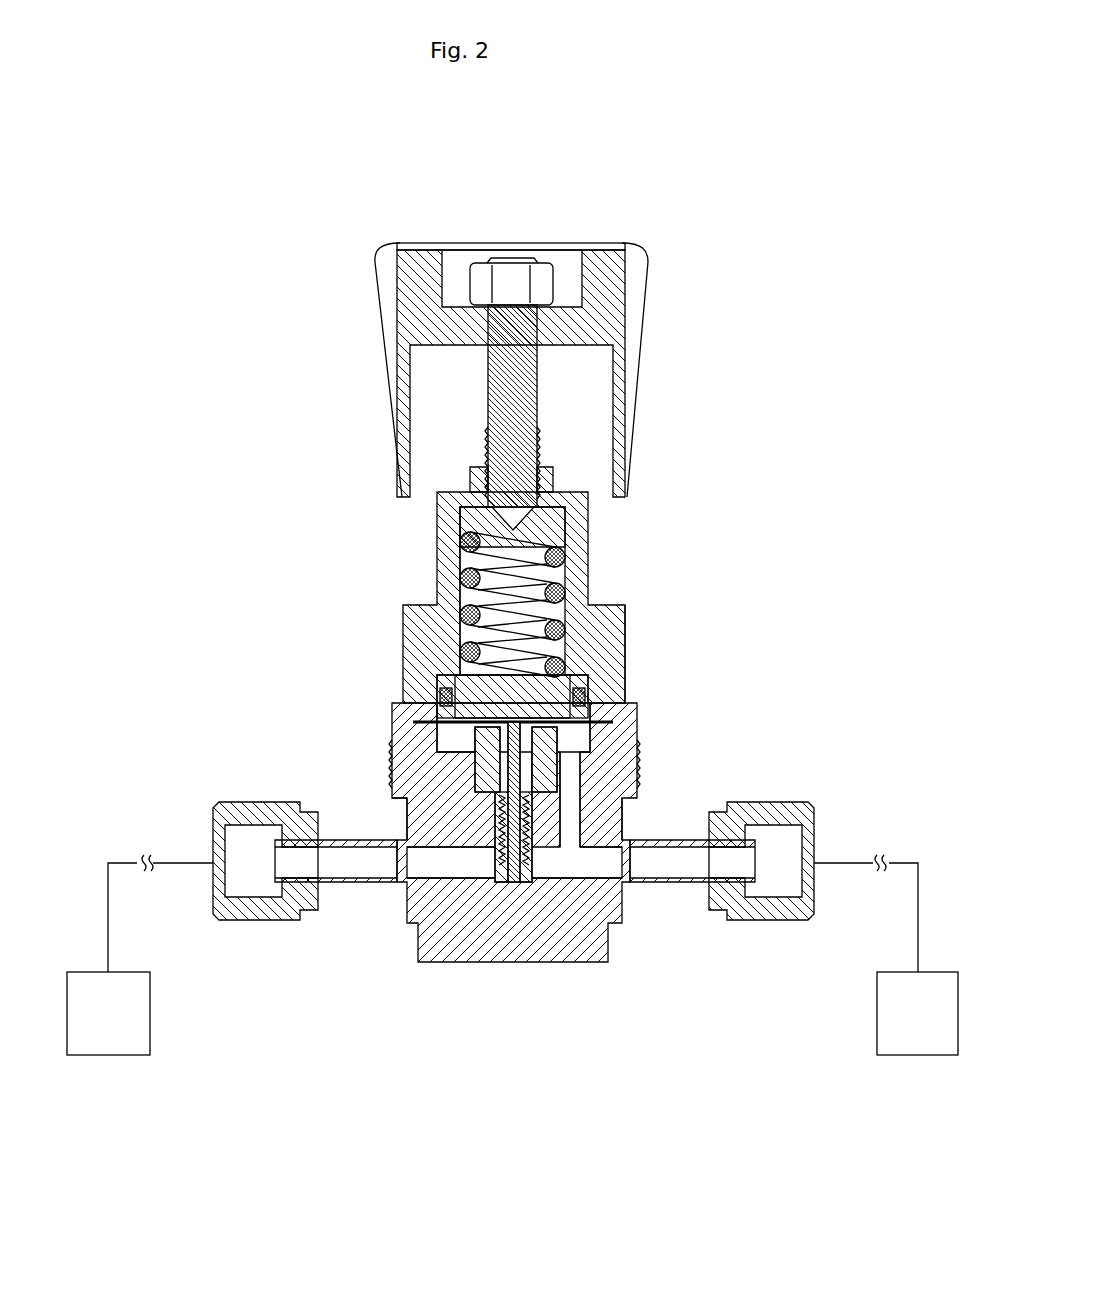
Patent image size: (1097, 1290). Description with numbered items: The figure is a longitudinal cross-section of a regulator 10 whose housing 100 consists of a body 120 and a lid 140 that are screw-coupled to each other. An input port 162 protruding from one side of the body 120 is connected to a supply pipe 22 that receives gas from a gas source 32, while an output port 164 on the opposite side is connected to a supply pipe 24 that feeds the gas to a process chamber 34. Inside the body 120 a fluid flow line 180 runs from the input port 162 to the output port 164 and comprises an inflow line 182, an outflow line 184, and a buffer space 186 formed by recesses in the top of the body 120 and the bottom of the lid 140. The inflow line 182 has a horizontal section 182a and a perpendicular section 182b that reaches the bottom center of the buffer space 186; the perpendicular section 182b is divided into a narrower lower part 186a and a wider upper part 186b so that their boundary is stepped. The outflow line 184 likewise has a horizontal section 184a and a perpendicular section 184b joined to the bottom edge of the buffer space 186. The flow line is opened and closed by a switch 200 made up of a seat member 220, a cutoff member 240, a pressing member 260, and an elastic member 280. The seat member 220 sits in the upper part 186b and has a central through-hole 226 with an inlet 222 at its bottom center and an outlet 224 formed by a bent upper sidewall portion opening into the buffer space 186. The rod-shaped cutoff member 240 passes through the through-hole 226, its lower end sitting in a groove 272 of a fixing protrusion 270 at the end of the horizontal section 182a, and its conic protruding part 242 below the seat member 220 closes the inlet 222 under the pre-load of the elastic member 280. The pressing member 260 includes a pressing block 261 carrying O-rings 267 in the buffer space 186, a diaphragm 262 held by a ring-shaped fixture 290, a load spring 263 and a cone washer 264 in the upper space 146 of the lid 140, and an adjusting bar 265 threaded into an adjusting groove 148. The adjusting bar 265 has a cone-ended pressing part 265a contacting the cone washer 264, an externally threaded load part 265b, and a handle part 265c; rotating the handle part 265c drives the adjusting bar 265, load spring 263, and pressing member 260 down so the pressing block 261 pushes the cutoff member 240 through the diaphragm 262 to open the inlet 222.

The regulator 10 is at (729, 174).
The supply pipe 22 is at (108, 935).
The supply pipe 24 is at (918, 935).
The gas source 32 is at (108, 1057).
The process chamber 34 is at (918, 1057).
The housing 100 is at (810, 645).
The body 120 is at (615, 808).
The lid 140 is at (630, 665).
The upper space 146 is at (462, 553).
The adjusting groove 148 is at (485, 440).
The input port 162 is at (352, 884).
The output port 164 is at (689, 884).
The fluid flow line 180 is at (602, 1112).
The inflow line 182 is at (503, 1068).
The horizontal section 182a is at (448, 868).
The perpendicular section 182b is at (480, 870).
The outflow line 184 is at (632, 1068).
The horizontal section 184a is at (598, 868).
The perpendicular section 184b is at (548, 872).
The buffer space 186 is at (445, 852).
The lower part 186a is at (406, 826).
The upper part 186b is at (432, 786).
The switch 200 is at (270, 652).
The seat member 220 is at (410, 762).
The inlet 222 is at (612, 778).
The outlet 224 is at (476, 745).
The through-hole 226 is at (606, 748).
The cutoff member 240 is at (478, 706).
The protruding part 242 is at (600, 806).
The pressing member 260 is at (460, 678).
The pressing block 261 is at (600, 645).
The diaphragm 262 is at (606, 722).
The load spring 263 is at (566, 590).
The cone washer 264 is at (548, 508).
The adjusting bar 265 is at (740, 372).
The pressing part 265a is at (555, 497).
The load part 265b is at (537, 437).
The handle part 265c is at (625, 385).
The O-rings 267 is at (578, 690).
The fixing protrusion 270 is at (527, 865).
The groove 272 is at (500, 870).
The elastic member 280 is at (503, 806).
The ring-shaped fixture 290 is at (587, 698).